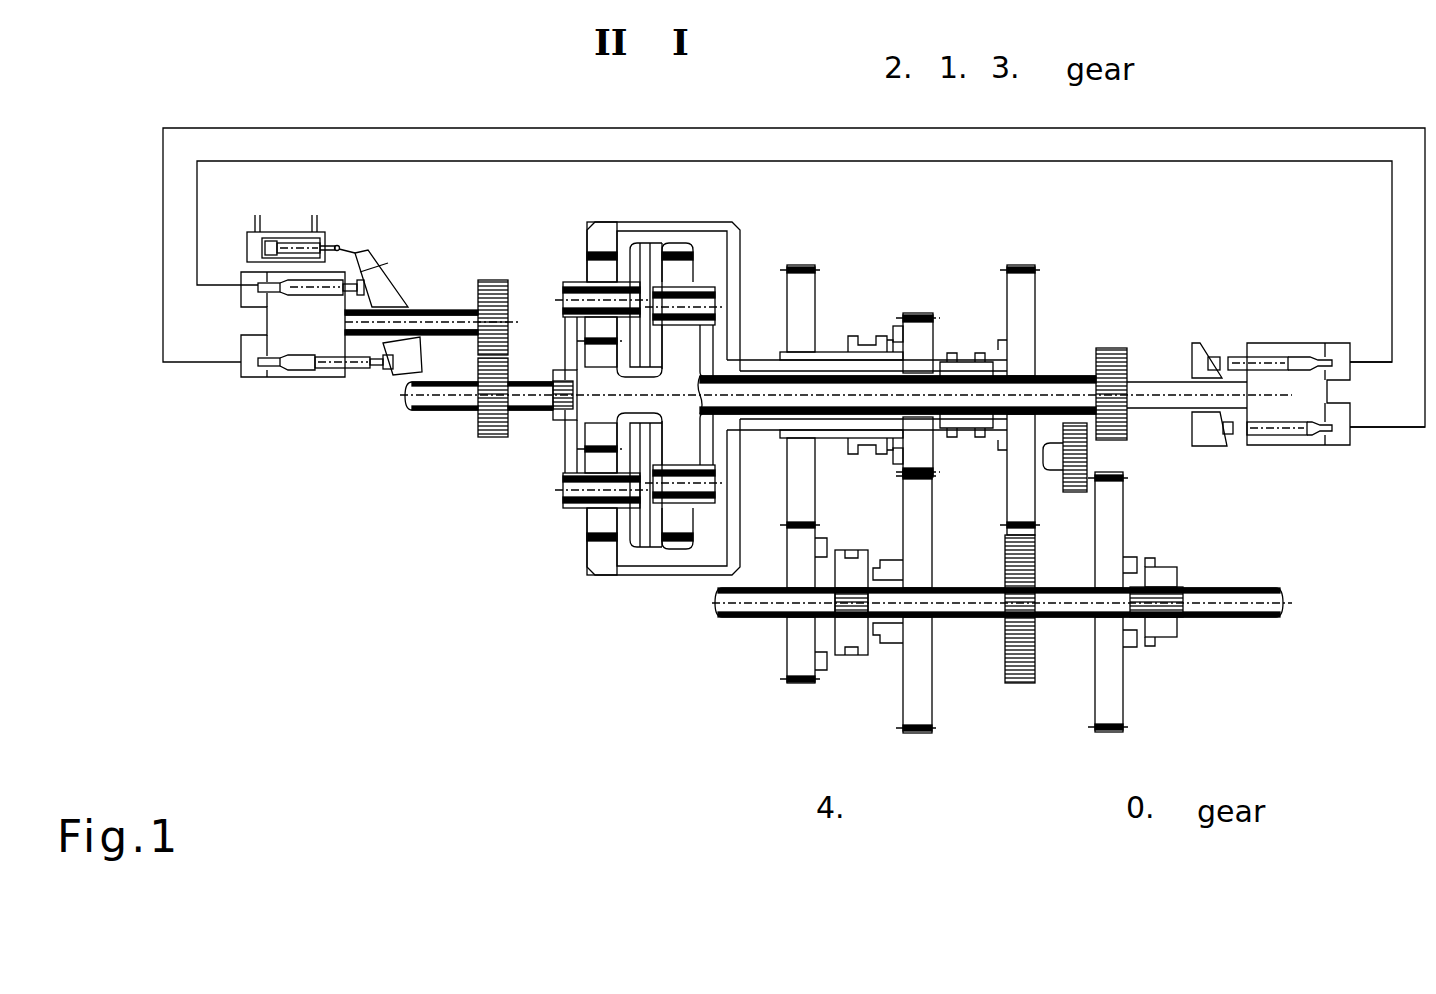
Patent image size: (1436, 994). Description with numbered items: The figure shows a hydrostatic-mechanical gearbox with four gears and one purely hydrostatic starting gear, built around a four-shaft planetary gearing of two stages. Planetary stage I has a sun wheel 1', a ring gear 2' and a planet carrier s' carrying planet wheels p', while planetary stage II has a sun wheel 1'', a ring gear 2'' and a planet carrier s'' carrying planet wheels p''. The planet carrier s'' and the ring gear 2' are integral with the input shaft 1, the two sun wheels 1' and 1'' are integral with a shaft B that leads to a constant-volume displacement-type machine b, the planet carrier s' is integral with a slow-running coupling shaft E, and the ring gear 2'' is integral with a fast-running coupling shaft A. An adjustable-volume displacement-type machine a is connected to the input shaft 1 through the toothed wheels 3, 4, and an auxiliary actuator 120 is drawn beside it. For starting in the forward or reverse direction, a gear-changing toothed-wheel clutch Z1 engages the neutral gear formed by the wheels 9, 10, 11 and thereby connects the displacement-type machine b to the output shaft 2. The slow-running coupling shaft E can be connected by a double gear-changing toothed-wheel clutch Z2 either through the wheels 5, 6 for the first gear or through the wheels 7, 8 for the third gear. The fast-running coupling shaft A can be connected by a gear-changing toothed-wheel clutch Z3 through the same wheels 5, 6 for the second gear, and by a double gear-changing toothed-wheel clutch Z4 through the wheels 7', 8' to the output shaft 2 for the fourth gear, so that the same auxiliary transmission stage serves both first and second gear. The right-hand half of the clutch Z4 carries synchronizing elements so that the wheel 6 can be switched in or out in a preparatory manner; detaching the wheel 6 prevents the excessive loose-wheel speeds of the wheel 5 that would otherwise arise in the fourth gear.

The auxiliary actuator 120 is at (325, 233).
The adjustable-volume displacement-type machine a is at (277, 375).
The input shaft 1 is at (490, 415).
The toothed wheel 3 is at (490, 440).
The toothed wheel 4 is at (500, 279).
The ring gear of planetary stage II 2'' is at (601, 382).
The ring gear of planetary stage I 2' is at (680, 369).
The planet wheels of planetary stage II p'' is at (582, 396).
The planet wheels of planetary stage I p' is at (692, 396).
The planet carrier of planetary stage II s'' is at (555, 395).
The planet carrier of planetary stage I s' is at (684, 503).
The sun wheel of planetary stage II 1'' is at (619, 310).
The sun wheel of planetary stage I 1' is at (626, 480).
The slow-running coupling shaft E is at (769, 421).
The fast-running coupling shaft A is at (761, 358).
The toothed wheel 7' is at (841, 331).
The gear-changing toothed-wheel clutch Z3 is at (869, 368).
The toothed wheel 5 is at (912, 335).
The double gear-changing toothed-wheel clutch Z2 is at (973, 366).
The toothed wheel 7 is at (1035, 400).
The toothed wheel 8 is at (1004, 609).
The toothed wheel 9 is at (1120, 348).
The shaft B is at (1173, 390).
The constant-volume displacement-type machine b is at (1313, 443).
The toothed wheel 10 is at (1071, 494).
The output shaft 2 is at (1002, 579).
The toothed wheel 8' is at (787, 560).
The double gear-changing toothed-wheel clutch Z4 is at (851, 633).
The toothed wheel 6 is at (923, 709).
The toothed wheel 11 is at (1103, 708).
The gear-changing toothed-wheel clutch Z1 is at (1156, 636).